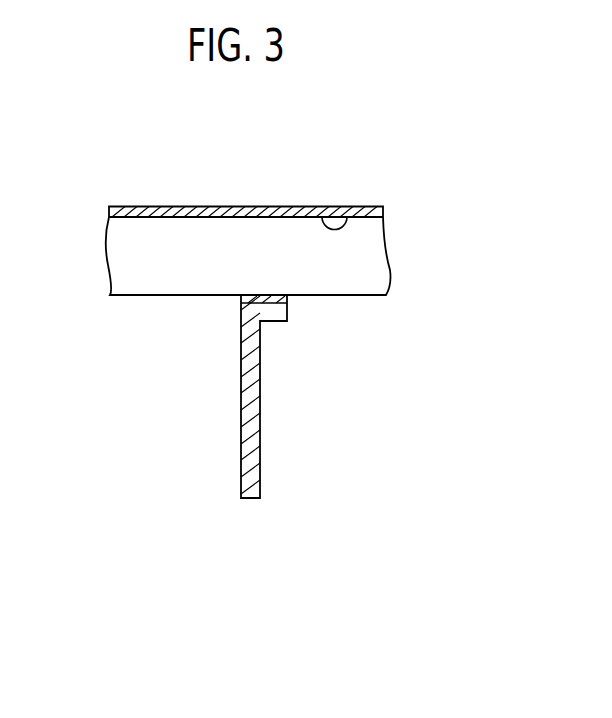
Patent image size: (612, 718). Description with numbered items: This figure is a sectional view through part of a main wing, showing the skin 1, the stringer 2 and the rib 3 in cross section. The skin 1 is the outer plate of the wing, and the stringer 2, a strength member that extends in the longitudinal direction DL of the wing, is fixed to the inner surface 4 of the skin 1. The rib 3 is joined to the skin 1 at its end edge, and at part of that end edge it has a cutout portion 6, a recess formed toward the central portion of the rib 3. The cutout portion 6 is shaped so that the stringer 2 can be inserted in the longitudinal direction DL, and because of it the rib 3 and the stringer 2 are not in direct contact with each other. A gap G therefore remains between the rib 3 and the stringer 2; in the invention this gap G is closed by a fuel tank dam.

The skin 1 is at (258, 205).
The stringer 2 is at (190, 240).
The rib 3 is at (259, 438).
The inner surface 4 is at (344, 220).
The cutout portion 6 is at (253, 297).
The gap G is at (266, 298).
The longitudinal direction DL is at (343, 622).